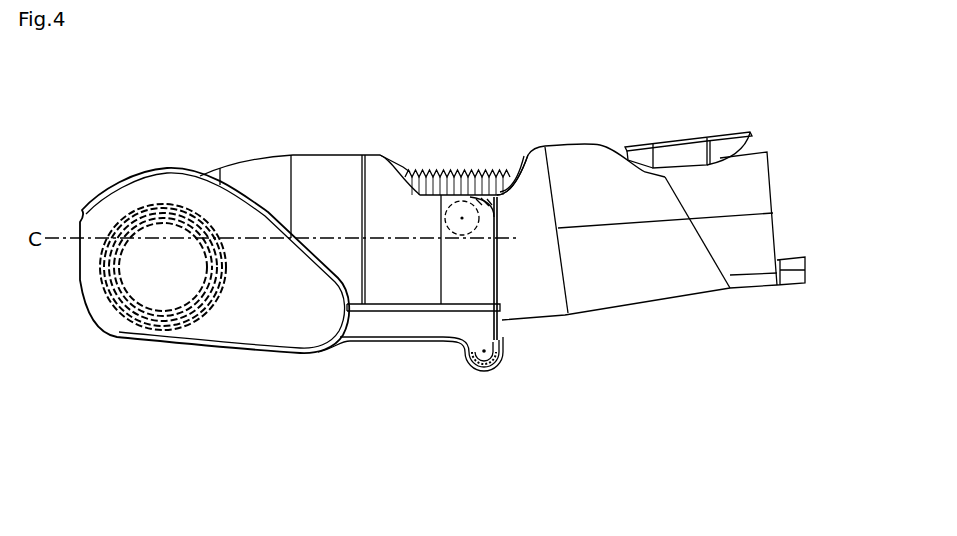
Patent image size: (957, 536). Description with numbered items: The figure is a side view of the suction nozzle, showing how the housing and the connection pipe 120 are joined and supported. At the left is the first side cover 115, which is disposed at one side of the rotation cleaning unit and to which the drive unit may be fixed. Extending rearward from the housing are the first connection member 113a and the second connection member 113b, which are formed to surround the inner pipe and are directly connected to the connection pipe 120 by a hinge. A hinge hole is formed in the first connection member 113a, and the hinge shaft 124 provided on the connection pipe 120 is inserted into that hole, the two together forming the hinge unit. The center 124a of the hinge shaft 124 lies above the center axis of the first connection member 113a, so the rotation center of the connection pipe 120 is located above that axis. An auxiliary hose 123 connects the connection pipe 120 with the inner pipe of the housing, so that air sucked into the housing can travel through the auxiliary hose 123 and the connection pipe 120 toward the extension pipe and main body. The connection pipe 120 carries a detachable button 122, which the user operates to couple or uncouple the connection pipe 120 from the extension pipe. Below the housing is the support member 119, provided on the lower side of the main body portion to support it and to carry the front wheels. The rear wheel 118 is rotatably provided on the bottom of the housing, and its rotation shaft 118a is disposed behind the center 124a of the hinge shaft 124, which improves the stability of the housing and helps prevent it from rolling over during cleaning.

The first connection member 113a is at (373, 170).
The second connection member 113b is at (323, 170).
The first side cover 115 is at (243, 333).
The rear wheel 118 is at (493, 377).
The rotation shaft of the rear wheel 118a is at (484, 351).
The support member 119 is at (402, 329).
The connection pipe 120 is at (650, 287).
The detachable button 122 is at (735, 130).
The auxiliary hose 123 is at (439, 170).
The hinge shaft 124 is at (476, 200).
The center of the hinge shaft 124a is at (462, 218).